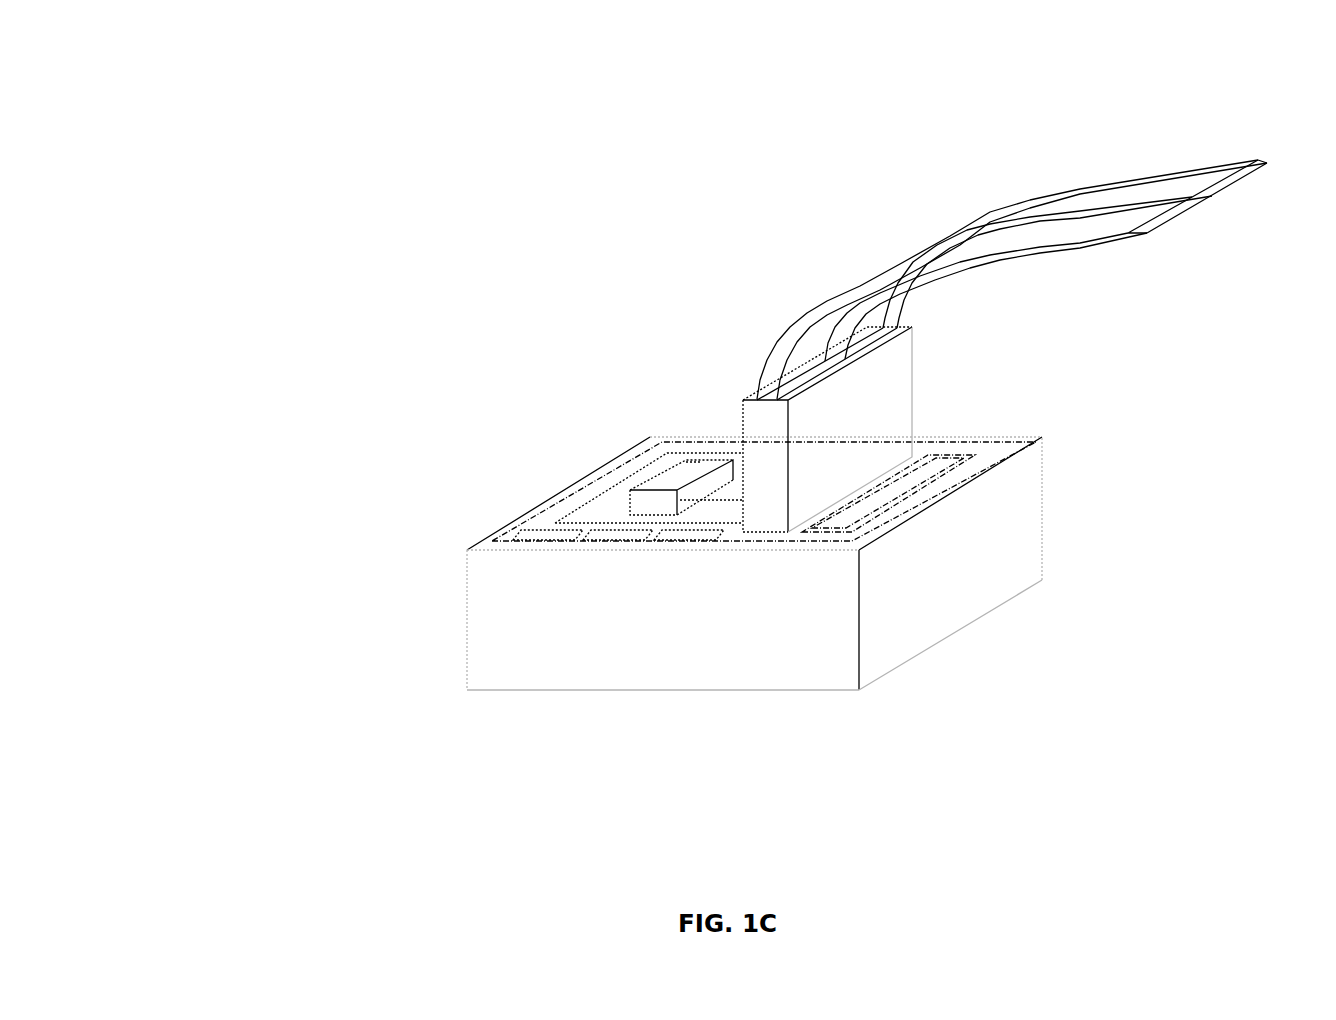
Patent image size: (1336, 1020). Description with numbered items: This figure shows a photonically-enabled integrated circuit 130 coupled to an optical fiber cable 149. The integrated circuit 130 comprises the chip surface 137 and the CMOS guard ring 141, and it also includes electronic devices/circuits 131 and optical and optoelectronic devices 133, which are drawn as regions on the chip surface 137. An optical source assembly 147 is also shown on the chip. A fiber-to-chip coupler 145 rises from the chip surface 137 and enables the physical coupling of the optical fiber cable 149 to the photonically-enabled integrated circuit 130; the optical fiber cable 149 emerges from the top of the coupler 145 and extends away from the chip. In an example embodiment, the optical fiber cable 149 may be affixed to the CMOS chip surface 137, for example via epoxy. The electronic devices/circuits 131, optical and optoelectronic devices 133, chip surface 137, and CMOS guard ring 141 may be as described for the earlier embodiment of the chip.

The photonically-enabled integrated circuit 130 is at (308, 100).
The electronic devices/circuits 131 is at (530, 541).
The optical and optoelectronic devices 133 is at (623, 517).
The chip surface 137 is at (607, 488).
The CMOS guard ring 141 is at (1031, 436).
The fiber-to-chip coupler 145 is at (868, 439).
The optical source assembly 147 is at (690, 468).
The optical fiber cable 149 is at (1073, 187).